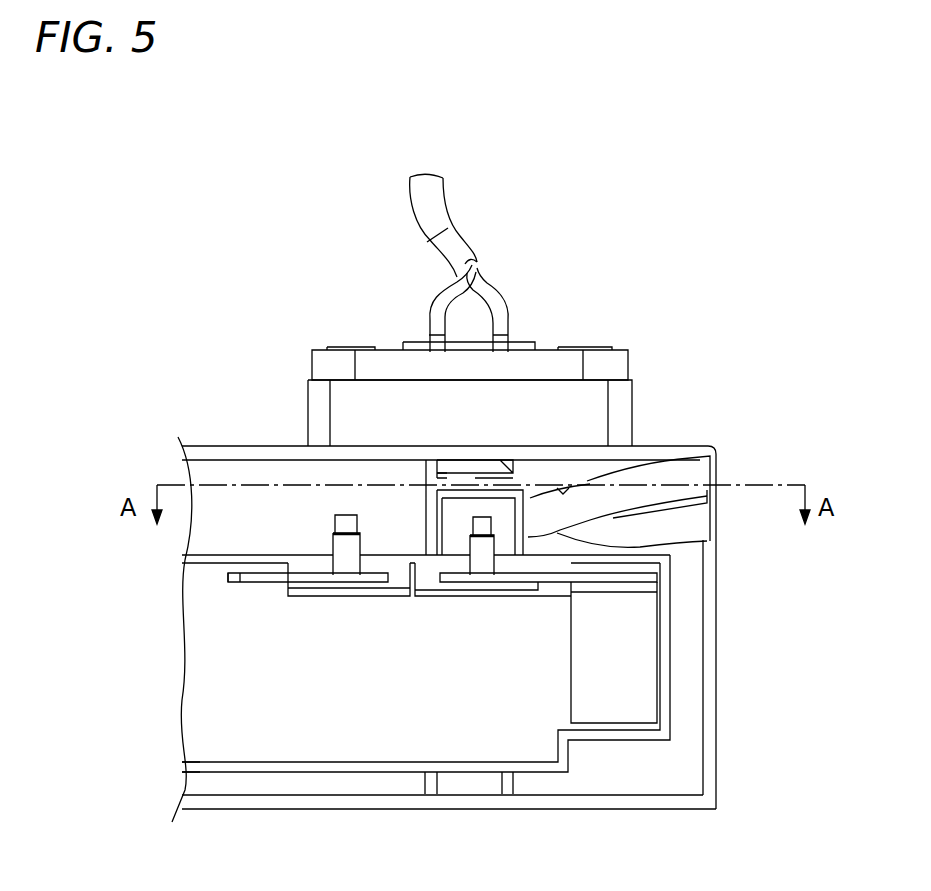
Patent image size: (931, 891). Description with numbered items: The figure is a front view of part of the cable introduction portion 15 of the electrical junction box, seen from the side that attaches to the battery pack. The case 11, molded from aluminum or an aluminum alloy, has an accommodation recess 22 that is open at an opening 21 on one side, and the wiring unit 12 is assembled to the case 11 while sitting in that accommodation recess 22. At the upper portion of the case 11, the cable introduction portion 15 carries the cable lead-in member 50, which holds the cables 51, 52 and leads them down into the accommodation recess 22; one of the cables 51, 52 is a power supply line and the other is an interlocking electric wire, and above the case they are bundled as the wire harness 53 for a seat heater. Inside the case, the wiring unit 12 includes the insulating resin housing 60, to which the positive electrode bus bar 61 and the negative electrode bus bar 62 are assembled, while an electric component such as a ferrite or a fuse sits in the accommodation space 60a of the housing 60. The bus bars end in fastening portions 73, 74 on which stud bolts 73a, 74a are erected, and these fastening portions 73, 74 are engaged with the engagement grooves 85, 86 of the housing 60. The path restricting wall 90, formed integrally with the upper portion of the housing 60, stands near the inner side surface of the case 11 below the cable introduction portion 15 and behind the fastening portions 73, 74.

The case 11 is at (266, 435).
The wiring unit 12 is at (682, 694).
The cable introduction portion 15 is at (480, 477).
The opening 21 is at (672, 795).
The accommodation recess 22 is at (690, 648).
The cable lead-in member 50 is at (518, 342).
The cable 51 is at (695, 523).
The cable 52 is at (693, 470).
The wire harness 53 is at (457, 243).
The housing 60 is at (243, 546).
The accommodation space 60a is at (208, 745).
The positive electrode bus bar 61 is at (253, 582).
The negative electrode bus bar 62 is at (613, 578).
The fastening portion 73 is at (380, 580).
The stud bolt 73a is at (348, 560).
The fastening portion 74 is at (453, 580).
The stud bolt 74a is at (482, 560).
The engagement groove 85 is at (317, 570).
The engagement groove 86 is at (530, 570).
The path restricting wall 90 is at (435, 512).